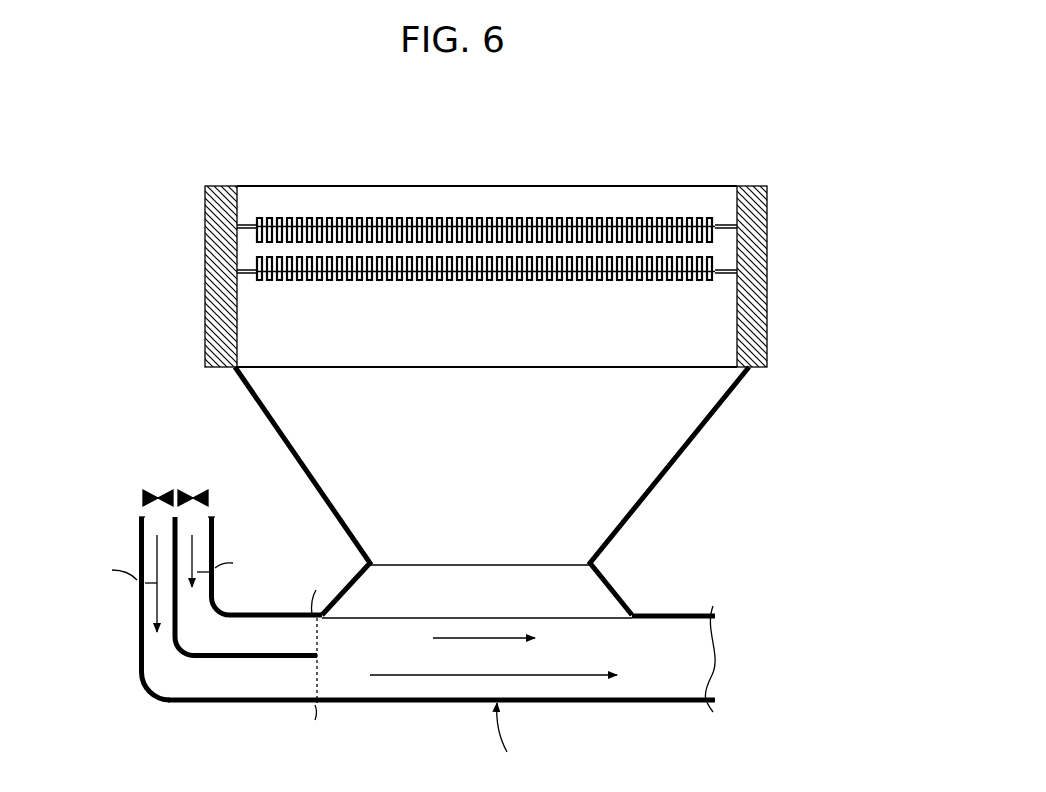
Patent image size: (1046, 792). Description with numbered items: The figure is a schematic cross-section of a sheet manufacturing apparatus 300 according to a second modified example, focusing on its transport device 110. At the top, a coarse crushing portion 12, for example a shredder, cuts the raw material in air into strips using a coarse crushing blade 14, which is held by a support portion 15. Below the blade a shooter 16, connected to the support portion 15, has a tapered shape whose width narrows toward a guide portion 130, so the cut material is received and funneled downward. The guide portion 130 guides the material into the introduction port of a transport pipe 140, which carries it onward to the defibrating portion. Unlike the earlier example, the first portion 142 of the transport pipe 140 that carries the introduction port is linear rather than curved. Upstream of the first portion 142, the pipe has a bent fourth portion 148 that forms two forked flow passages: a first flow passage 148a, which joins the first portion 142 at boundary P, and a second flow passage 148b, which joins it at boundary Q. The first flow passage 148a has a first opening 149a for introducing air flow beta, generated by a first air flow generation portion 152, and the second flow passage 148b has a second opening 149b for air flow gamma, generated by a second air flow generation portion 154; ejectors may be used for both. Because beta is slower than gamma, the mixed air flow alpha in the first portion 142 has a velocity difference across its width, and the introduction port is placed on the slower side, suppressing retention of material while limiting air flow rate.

The sheet manufacturing apparatus 300 is at (806, 162).
The coarse crushing portion 12 is at (216, 178).
The coarse crushing blade 14 is at (407, 216).
The support portion 15 is at (218, 321).
The shooter 16 is at (290, 400).
The transport device 110 is at (642, 548).
The guide portion 130 is at (567, 587).
The transport pipe 140 is at (688, 598).
The first portion 142 is at (427, 705).
The fourth portion 148 is at (200, 703).
The first flow passage 148a is at (257, 581).
The second flow passage 148b is at (230, 608).
The first opening 149a is at (213, 517).
The second opening 149b is at (150, 514).
The first air flow generation portion 152 is at (195, 488).
The second air flow generation portion 154 is at (148, 488).